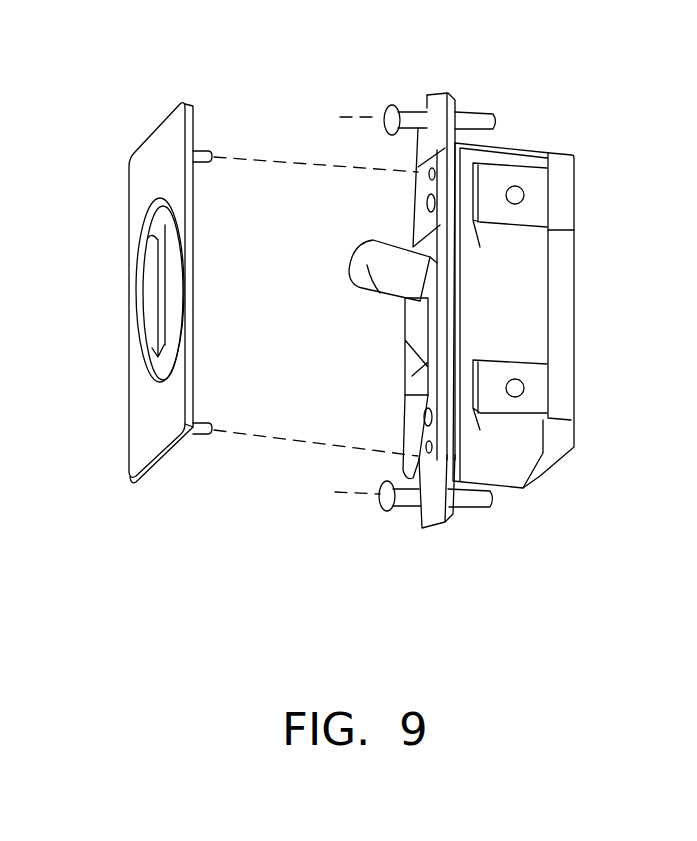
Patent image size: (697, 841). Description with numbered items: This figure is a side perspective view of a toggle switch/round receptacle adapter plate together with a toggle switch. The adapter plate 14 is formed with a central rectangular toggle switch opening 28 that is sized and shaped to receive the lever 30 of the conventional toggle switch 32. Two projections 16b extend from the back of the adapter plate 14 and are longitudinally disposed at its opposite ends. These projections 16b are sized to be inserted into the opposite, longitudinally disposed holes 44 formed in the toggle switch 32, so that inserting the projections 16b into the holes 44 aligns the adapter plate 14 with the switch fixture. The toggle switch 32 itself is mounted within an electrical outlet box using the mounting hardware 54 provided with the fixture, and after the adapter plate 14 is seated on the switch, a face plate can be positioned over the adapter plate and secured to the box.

The adapter plate 14 is at (135, 450).
The projections 16b is at (203, 150).
The toggle switch opening 28 is at (160, 292).
The lever 30 is at (380, 293).
The toggle switch 32 is at (558, 278).
The holes 44 is at (420, 170).
The mounting hardware 54 is at (408, 115).